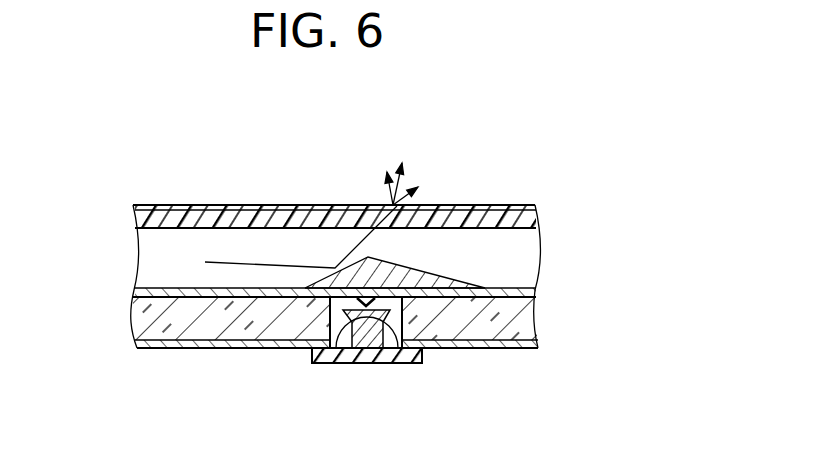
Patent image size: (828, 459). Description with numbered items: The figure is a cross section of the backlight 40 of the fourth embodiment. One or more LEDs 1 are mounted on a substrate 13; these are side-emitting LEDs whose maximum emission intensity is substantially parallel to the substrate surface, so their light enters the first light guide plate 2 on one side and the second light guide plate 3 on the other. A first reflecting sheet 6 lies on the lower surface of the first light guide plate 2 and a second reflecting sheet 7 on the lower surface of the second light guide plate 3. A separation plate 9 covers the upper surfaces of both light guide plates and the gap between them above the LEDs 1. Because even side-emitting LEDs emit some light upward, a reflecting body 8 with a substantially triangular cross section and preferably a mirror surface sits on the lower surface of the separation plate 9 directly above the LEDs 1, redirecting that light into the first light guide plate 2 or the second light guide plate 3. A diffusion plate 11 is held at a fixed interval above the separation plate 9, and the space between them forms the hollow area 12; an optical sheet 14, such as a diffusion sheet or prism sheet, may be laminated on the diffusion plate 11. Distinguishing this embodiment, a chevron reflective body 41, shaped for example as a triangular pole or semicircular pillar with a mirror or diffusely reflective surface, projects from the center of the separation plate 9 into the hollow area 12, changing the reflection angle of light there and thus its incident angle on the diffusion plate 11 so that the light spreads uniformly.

The LED 1 is at (356, 348).
The first light guide plate 2 is at (150, 320).
The second light guide plate 3 is at (505, 320).
The first reflecting sheet 6 is at (175, 348).
The second reflecting sheet 7 is at (513, 347).
The reflecting body 8 is at (407, 303).
The separation plate 9 is at (505, 290).
The diffusion plate 11 is at (192, 220).
The hollow area 12 is at (160, 248).
The substrate 13 is at (397, 358).
The optical sheet 14 is at (240, 215).
The backlight 40 is at (617, 268).
The chevron reflective body 41 is at (412, 280).